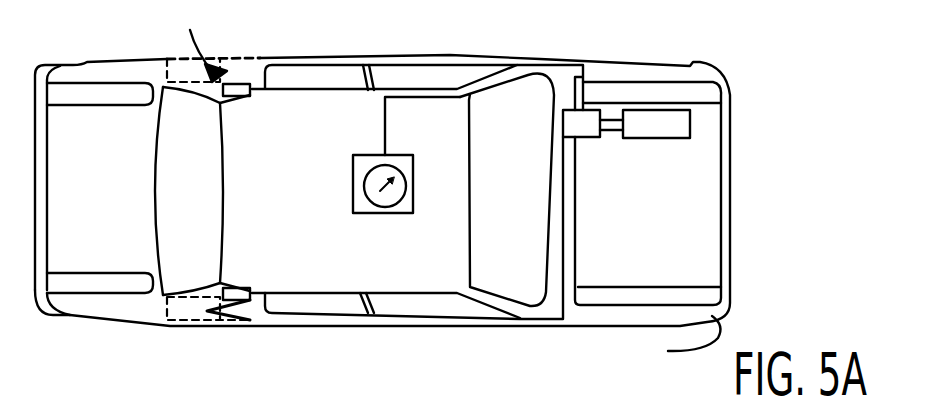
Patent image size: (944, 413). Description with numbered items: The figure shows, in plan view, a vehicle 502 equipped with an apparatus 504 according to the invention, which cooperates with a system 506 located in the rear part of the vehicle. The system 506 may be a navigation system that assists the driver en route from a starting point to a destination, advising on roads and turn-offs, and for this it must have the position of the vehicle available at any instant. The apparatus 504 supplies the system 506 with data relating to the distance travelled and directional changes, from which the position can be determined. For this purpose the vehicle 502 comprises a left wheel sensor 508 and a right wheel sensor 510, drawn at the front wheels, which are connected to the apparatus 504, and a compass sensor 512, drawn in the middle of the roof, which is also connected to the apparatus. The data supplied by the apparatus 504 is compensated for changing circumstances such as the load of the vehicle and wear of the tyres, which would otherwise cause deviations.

The vehicle 502 is at (668, 351).
The apparatus 504 is at (590, 138).
The system 506 is at (668, 138).
The left wheel sensor 508 is at (250, 98).
The right wheel sensor 510 is at (238, 283).
The compass sensor 512 is at (385, 213).